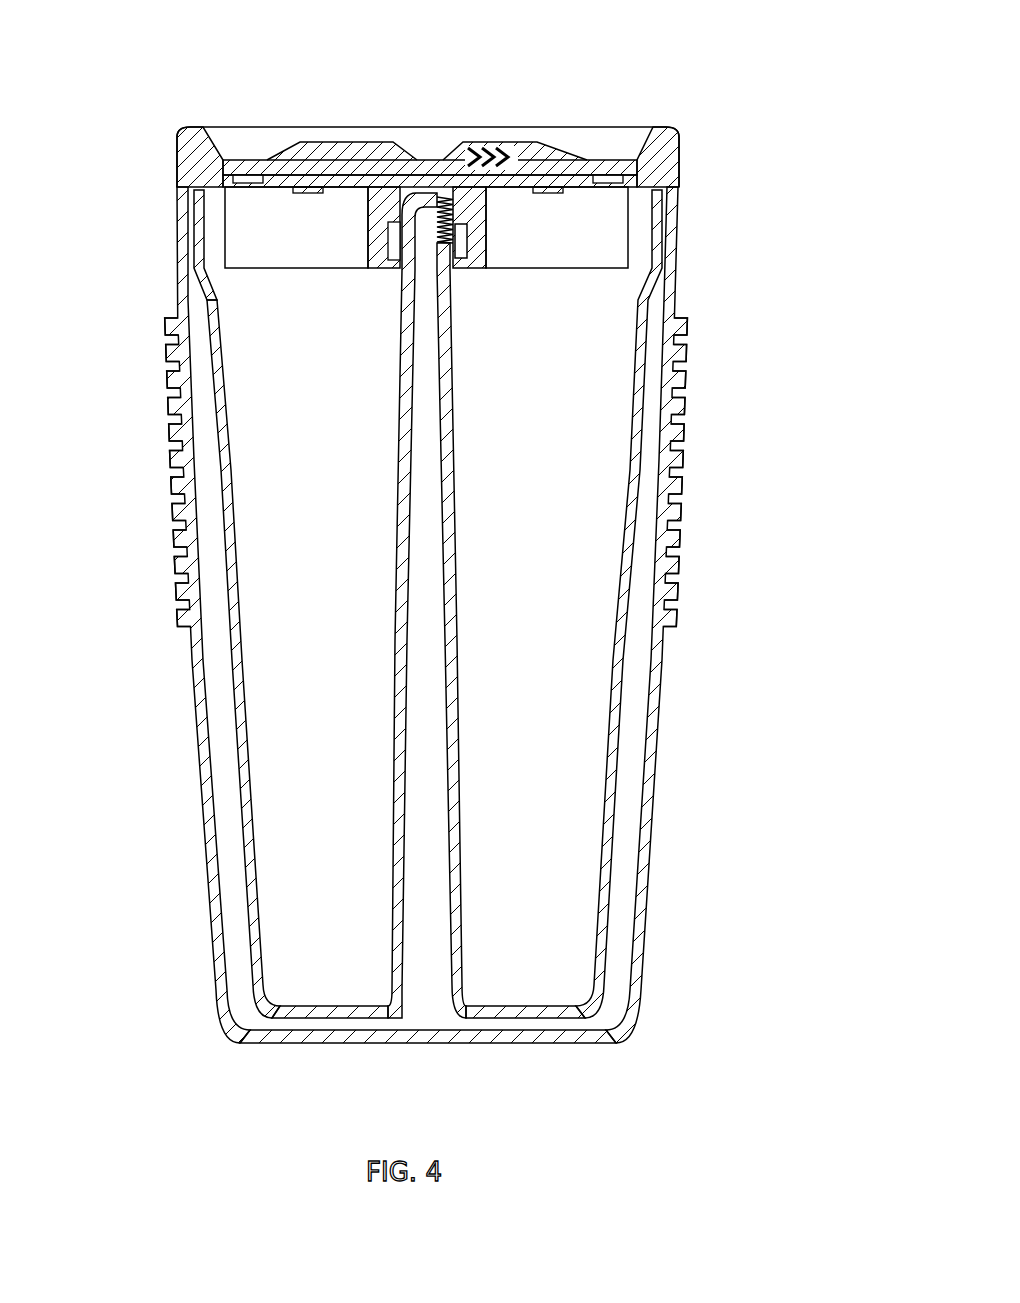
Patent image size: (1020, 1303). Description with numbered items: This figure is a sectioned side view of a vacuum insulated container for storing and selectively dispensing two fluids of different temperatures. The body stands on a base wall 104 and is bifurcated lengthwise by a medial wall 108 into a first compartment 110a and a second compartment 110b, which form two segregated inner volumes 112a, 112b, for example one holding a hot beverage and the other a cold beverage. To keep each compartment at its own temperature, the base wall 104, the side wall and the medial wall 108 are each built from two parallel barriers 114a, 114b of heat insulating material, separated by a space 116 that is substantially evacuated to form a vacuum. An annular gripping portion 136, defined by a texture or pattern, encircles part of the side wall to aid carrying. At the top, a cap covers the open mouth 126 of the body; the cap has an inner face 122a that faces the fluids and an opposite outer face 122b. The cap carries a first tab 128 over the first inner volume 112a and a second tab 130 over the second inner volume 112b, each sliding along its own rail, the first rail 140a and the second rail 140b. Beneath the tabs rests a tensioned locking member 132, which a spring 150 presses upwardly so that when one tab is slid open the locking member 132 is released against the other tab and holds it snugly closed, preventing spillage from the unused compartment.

The base wall 104 is at (422, 1038).
The medial wall 108 is at (374, 412).
The first compartment 110a is at (253, 871).
The second compartment 110b is at (605, 880).
The inner volume of the first compartment 112a is at (255, 684).
The inner volume of the second compartment 112b is at (600, 677).
The first barrier 114a is at (393, 807).
The second barrier 114b is at (456, 802).
The space 116 is at (418, 723).
The inner face 122a is at (626, 178).
The outer face 122b is at (549, 120).
The open mouth 126 is at (210, 283).
The first tab 128 is at (340, 170).
The second tab 130 is at (497, 146).
The tensioned locking member 132 is at (432, 170).
The gripping portion 136 is at (165, 478).
The first rail 140a is at (272, 172).
The second rail 140b is at (592, 168).
The spring 150 is at (455, 256).